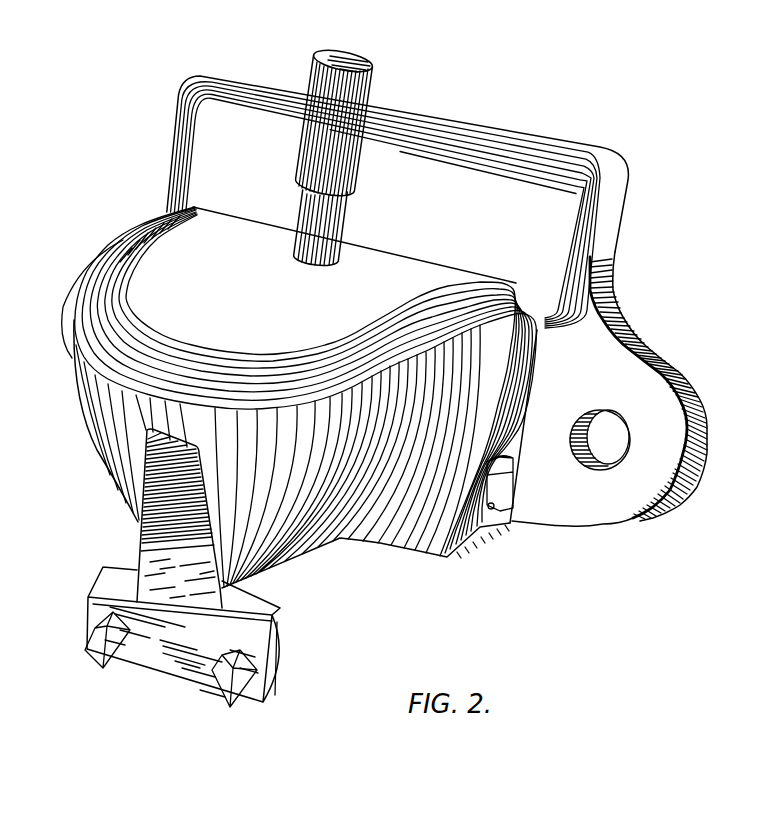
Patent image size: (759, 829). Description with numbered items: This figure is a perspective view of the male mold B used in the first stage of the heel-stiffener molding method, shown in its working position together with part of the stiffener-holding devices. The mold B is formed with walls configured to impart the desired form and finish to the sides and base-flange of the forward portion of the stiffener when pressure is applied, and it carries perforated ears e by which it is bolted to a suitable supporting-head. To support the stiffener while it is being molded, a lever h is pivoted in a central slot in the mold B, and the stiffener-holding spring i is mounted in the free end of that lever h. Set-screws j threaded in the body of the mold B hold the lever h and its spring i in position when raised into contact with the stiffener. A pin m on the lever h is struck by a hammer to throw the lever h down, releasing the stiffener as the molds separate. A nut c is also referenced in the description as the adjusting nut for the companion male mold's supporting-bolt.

The pin m is at (334, 149).
The male mold B is at (243, 314).
The perforated ears e is at (82, 277).
The nut c is at (604, 426).
The set-screws j is at (513, 479).
The stiffening-holding spring i is at (196, 589).
The lever h is at (245, 592).